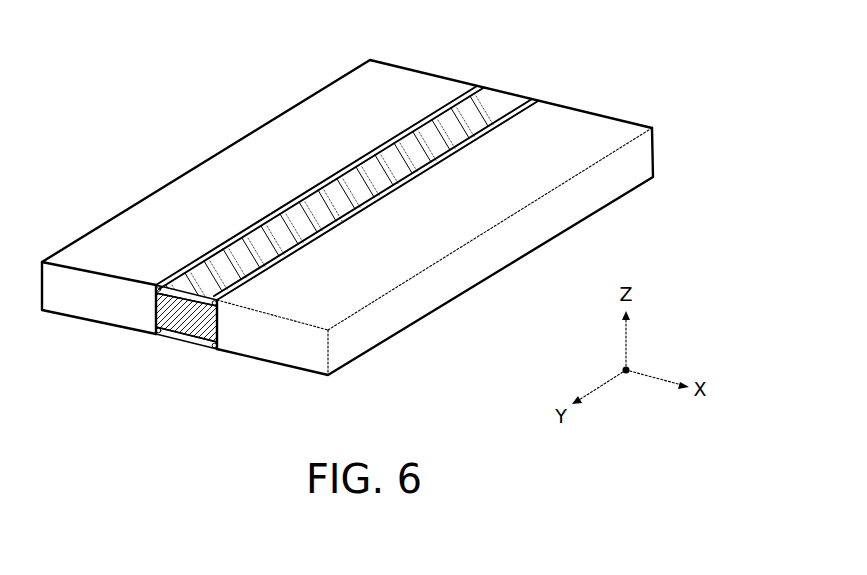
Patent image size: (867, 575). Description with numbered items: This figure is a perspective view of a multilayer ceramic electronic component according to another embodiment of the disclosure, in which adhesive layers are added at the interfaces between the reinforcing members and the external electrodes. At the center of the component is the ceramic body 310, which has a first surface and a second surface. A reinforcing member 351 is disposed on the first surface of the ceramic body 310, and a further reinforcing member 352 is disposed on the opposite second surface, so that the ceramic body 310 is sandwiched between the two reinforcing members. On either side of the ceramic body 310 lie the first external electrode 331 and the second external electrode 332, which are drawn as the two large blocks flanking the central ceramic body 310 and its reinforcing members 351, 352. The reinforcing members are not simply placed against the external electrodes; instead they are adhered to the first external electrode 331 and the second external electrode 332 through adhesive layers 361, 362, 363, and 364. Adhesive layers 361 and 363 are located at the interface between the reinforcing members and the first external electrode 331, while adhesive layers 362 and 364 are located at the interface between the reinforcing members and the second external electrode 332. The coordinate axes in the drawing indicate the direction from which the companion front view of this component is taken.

The ceramic body 310 is at (165, 338).
The first external electrode 331 is at (198, 181).
The second external electrode 332 is at (487, 263).
The reinforcing member 351 is at (497, 97).
The reinforcing member 352 is at (188, 348).
The adhesive layer 361 is at (447, 103).
The adhesive layer 362 is at (518, 118).
The adhesive layer 363 is at (155, 338).
The adhesive layer 364 is at (216, 352).